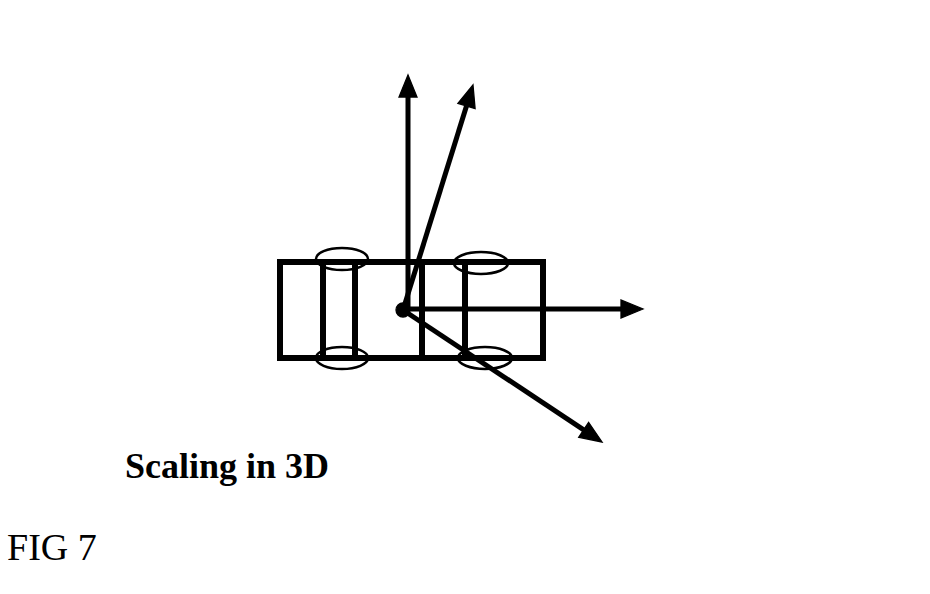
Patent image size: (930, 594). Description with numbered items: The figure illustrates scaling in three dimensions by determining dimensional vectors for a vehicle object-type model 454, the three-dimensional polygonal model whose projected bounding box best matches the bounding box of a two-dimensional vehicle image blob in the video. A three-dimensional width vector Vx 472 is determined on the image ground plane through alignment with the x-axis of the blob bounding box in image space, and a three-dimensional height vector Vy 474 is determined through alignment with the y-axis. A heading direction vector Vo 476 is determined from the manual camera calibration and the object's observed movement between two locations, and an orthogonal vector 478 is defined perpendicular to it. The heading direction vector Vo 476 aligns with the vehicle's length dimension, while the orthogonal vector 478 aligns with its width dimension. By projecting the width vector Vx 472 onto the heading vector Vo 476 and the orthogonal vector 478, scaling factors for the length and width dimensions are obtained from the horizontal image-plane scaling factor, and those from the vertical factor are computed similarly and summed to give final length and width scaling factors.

The vehicle object-type model 454 is at (278, 262).
The 3D width vector Vx 472 is at (532, 398).
The 3D height vector Vy 474 is at (460, 143).
The heading direction vector Vo 476 is at (573, 307).
The orthogonal vector VoT 478 is at (407, 137).